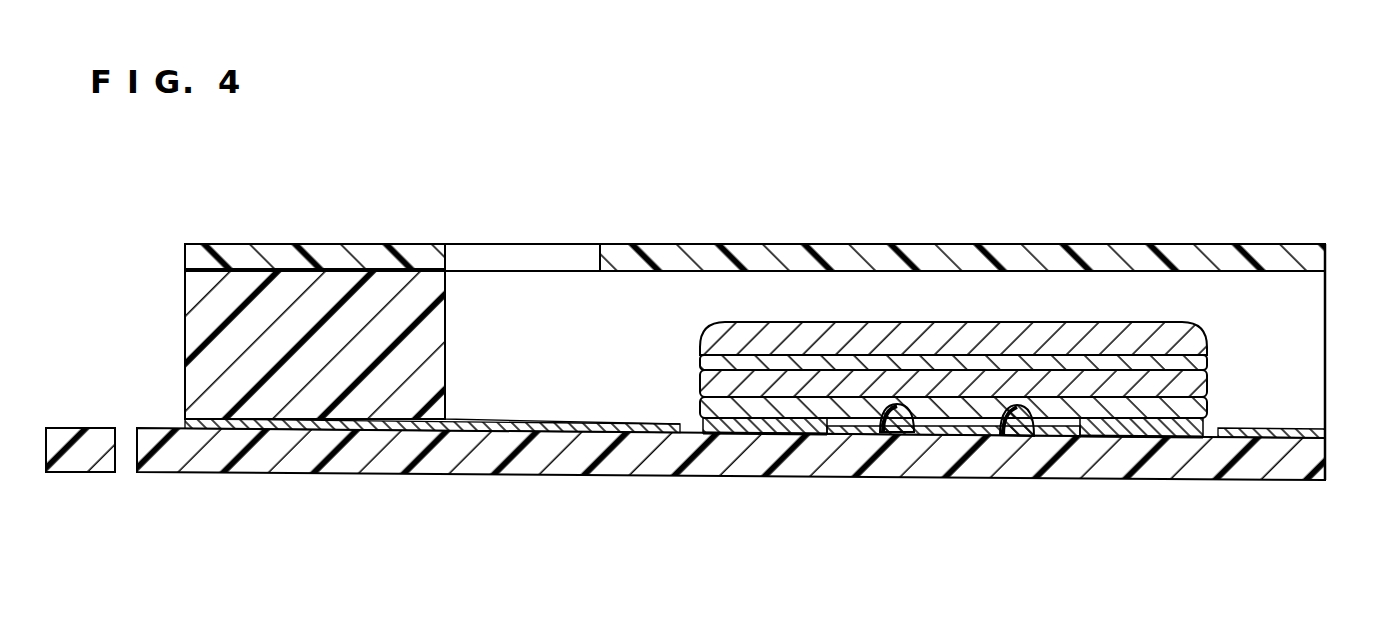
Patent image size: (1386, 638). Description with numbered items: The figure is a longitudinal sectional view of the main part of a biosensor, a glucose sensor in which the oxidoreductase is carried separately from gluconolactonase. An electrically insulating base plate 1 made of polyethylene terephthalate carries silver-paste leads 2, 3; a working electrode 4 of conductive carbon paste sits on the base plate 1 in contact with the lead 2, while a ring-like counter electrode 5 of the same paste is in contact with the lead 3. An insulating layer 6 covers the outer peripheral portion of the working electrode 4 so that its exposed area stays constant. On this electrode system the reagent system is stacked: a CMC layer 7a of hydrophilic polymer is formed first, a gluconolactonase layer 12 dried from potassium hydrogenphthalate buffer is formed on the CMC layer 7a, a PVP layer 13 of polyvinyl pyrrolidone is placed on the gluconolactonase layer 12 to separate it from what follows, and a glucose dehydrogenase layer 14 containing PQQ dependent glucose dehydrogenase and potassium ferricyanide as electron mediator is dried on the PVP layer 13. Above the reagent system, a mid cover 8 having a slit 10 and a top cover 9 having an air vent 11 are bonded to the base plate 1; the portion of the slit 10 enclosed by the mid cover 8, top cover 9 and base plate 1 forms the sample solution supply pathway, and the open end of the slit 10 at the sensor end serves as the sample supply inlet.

The base plate 1 is at (357, 450).
The lead 2 is at (945, 436).
The lead 3 is at (755, 432).
The working electrode 4 is at (1010, 414).
The counter electrode 5 is at (790, 437).
The insulating layer 6 is at (586, 424).
The CMC layer 7a is at (1062, 412).
The mid cover 8 is at (210, 322).
The top cover 9 is at (288, 257).
The slit 10 is at (1305, 340).
The air vent 11 is at (517, 258).
The gluconolactonase layer 12 is at (865, 390).
The PVP layer 13 is at (760, 360).
The glucose dehydrogenase layer 14 is at (972, 330).